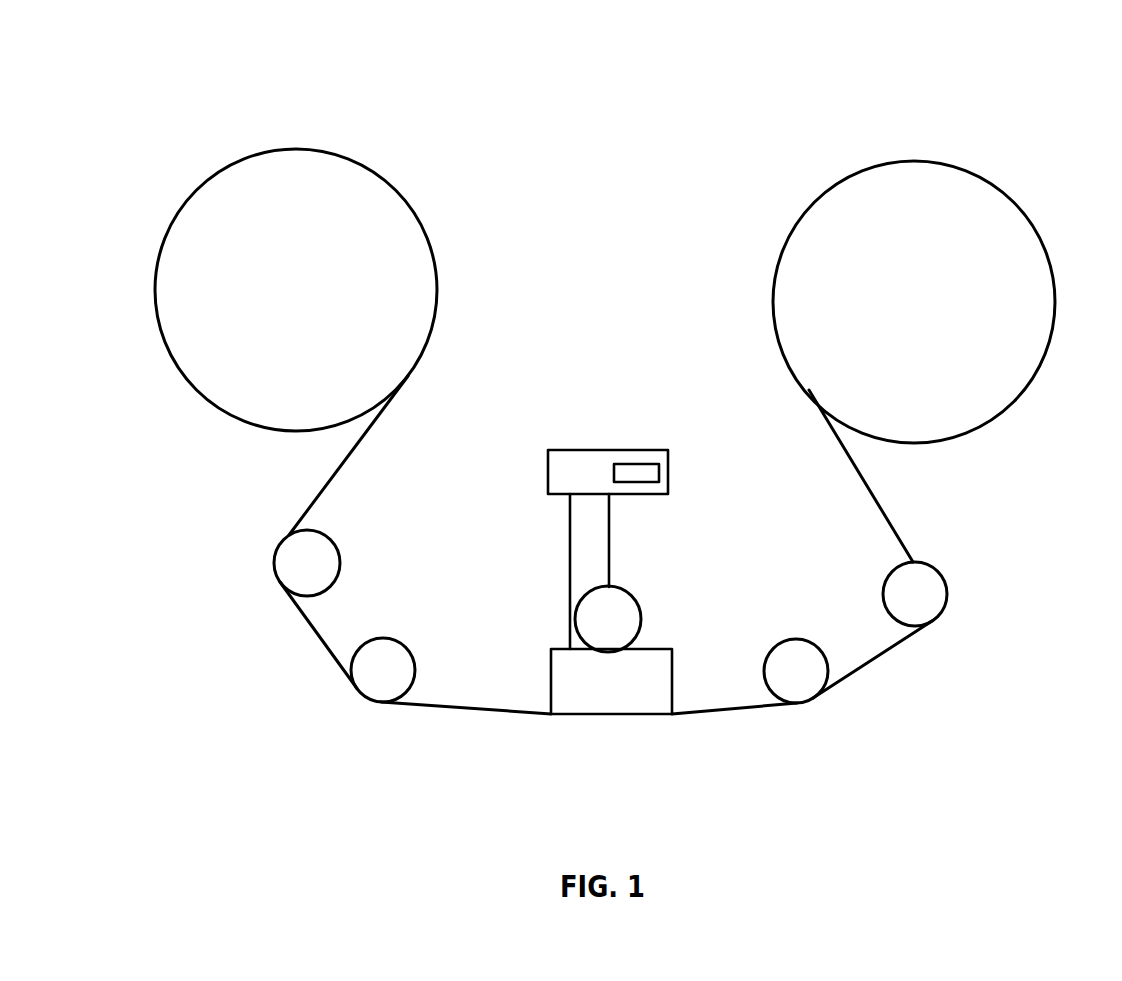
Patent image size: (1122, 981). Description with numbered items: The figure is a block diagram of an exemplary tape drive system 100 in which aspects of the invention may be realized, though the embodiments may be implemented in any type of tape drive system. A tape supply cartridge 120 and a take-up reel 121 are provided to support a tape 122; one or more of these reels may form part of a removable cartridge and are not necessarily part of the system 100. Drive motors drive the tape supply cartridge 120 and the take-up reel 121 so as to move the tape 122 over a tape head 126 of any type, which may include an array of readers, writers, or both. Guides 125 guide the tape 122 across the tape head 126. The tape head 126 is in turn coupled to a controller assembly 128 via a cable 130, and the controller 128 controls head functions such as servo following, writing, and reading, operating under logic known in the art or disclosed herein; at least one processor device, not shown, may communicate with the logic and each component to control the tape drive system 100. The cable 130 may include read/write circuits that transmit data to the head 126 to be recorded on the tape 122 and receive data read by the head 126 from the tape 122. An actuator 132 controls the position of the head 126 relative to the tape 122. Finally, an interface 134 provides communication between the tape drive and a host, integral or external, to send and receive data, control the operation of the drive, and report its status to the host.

The tape drive system 100 is at (251, 482).
The tape supply cartridge 120 is at (436, 262).
The take-up reel 121 is at (1002, 413).
The tape 122 is at (472, 710).
The guides 125 is at (384, 637).
The tape head 126 is at (673, 678).
The controller assembly 128 is at (608, 450).
The cable 130 is at (570, 615).
The actuator 132 is at (632, 595).
The interface 134 is at (648, 464).